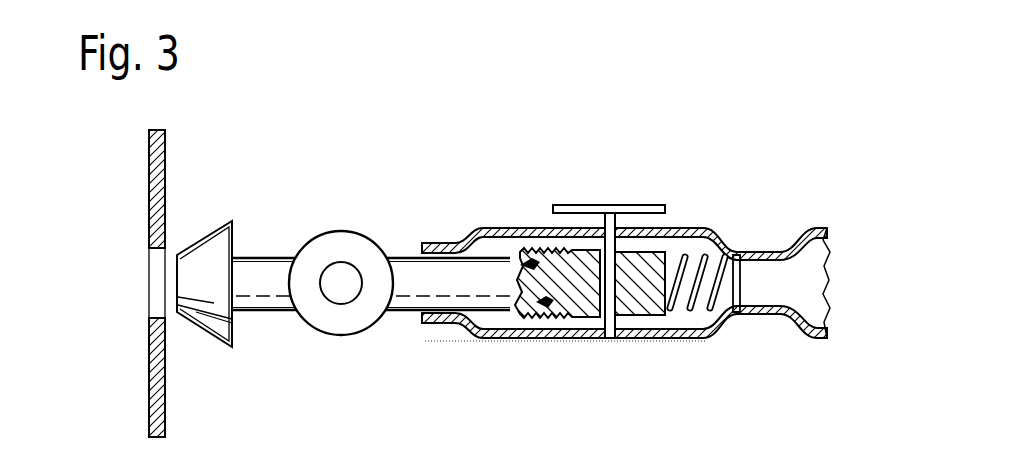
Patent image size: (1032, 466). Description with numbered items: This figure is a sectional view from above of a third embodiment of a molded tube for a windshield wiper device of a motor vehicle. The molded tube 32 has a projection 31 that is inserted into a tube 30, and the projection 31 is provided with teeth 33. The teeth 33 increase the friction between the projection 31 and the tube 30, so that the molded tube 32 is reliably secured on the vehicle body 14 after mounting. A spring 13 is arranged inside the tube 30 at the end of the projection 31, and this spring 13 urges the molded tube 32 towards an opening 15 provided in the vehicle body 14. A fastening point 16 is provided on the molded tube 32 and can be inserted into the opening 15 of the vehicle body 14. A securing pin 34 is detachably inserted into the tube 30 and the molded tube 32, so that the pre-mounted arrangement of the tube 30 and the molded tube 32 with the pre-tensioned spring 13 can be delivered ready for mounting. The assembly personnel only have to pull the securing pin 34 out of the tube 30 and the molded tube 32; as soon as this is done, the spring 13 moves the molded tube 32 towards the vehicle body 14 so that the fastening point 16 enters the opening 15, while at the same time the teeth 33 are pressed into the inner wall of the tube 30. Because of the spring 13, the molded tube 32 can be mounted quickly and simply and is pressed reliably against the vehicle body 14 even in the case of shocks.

The spring 13 is at (690, 317).
The vehicle body 14 is at (152, 371).
The opening 15 is at (146, 257).
The fastening point 16 is at (236, 320).
The tube 30 is at (713, 235).
The projection 31 is at (477, 275).
The molded tube 32 is at (340, 243).
The teeth 33 is at (518, 265).
The securing pin 34 is at (636, 212).